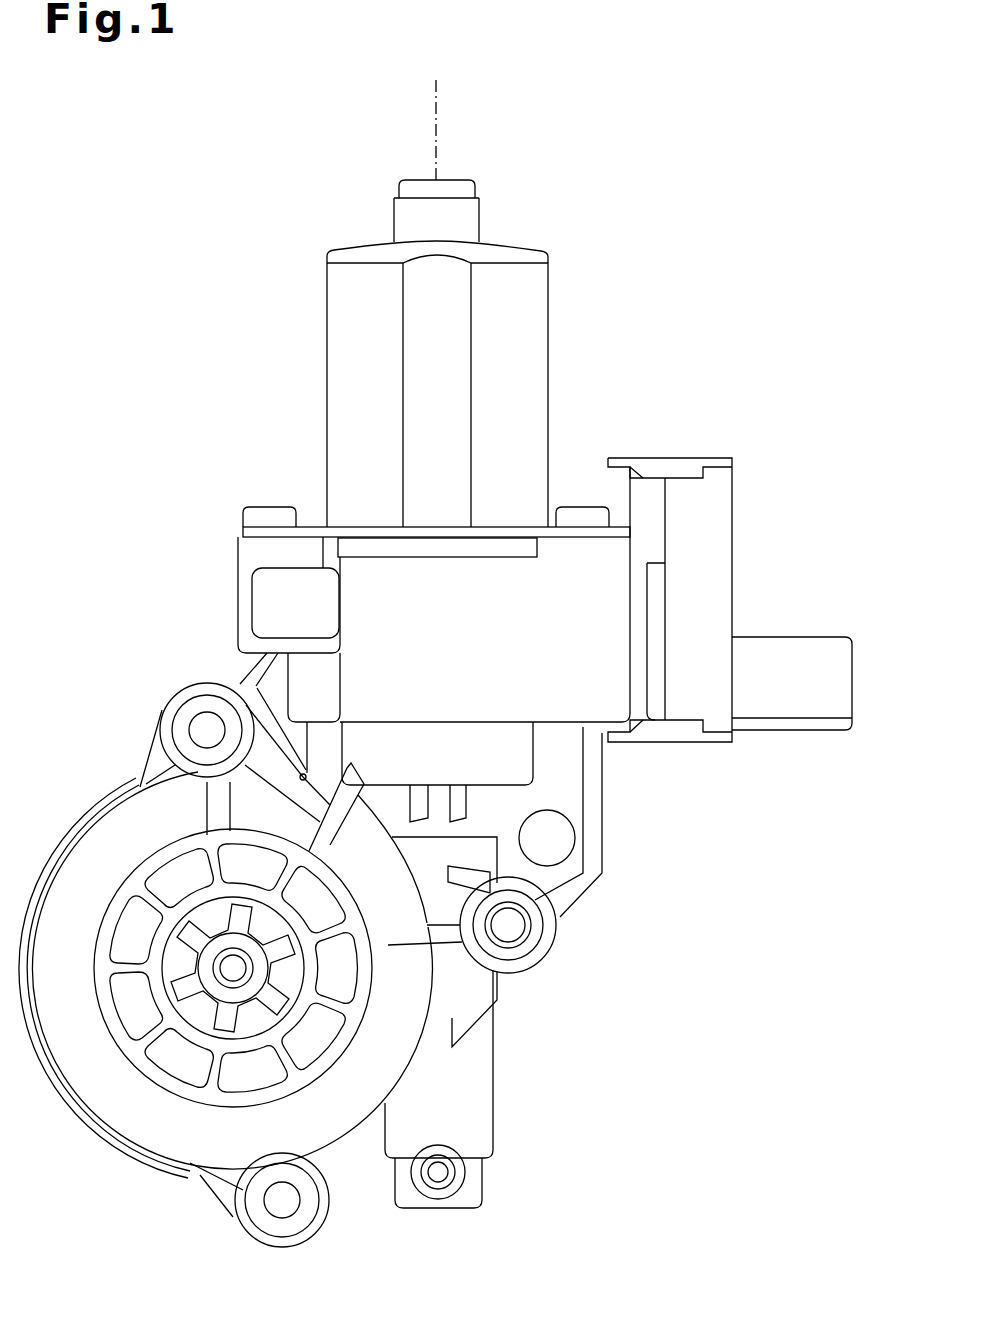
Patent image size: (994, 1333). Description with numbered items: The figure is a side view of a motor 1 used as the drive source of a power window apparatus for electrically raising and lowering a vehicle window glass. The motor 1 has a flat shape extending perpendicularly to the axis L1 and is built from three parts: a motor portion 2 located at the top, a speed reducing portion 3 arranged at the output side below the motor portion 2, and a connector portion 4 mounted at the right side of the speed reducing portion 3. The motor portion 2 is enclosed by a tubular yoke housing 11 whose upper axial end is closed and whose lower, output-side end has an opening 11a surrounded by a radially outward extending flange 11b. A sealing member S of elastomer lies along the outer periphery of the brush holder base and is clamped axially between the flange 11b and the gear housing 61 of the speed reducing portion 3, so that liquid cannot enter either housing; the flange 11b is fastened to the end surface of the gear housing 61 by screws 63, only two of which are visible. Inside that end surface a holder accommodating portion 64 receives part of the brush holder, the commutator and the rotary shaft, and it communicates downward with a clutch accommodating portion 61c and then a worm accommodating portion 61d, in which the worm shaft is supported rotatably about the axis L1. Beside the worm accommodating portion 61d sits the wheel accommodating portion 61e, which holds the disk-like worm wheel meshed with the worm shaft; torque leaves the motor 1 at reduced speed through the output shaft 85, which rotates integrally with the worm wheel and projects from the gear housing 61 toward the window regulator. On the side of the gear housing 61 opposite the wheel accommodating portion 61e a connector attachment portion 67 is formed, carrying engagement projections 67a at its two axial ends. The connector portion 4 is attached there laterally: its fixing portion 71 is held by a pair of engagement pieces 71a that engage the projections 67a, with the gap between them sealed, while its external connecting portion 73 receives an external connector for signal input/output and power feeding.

The motor 1 is at (664, 211).
The motor portion 2 is at (459, 353).
The speed reducing portion 3 is at (410, 594).
The connector portion 4 is at (727, 599).
The yoke housing 11 is at (533, 318).
The opening 11a is at (361, 516).
The flange 11b is at (508, 506).
The sealing member S is at (440, 550).
The gear housing 61 is at (342, 857).
The clutch accommodating portion 61c is at (512, 758).
The worm accommodating portion 61d is at (493, 1062).
The wheel accommodating portion 61e is at (109, 790).
The screws 63 is at (266, 507).
The holder accommodating portion 64 is at (360, 617).
The connector attachment portion 67 is at (658, 598).
The engagement projections 67a is at (638, 468).
The fixing portion 71 is at (695, 599).
The engagement pieces 71a is at (720, 545).
The external connecting portion 73 is at (785, 636).
The output shaft 85 is at (207, 953).
The axis L1 is at (438, 100).